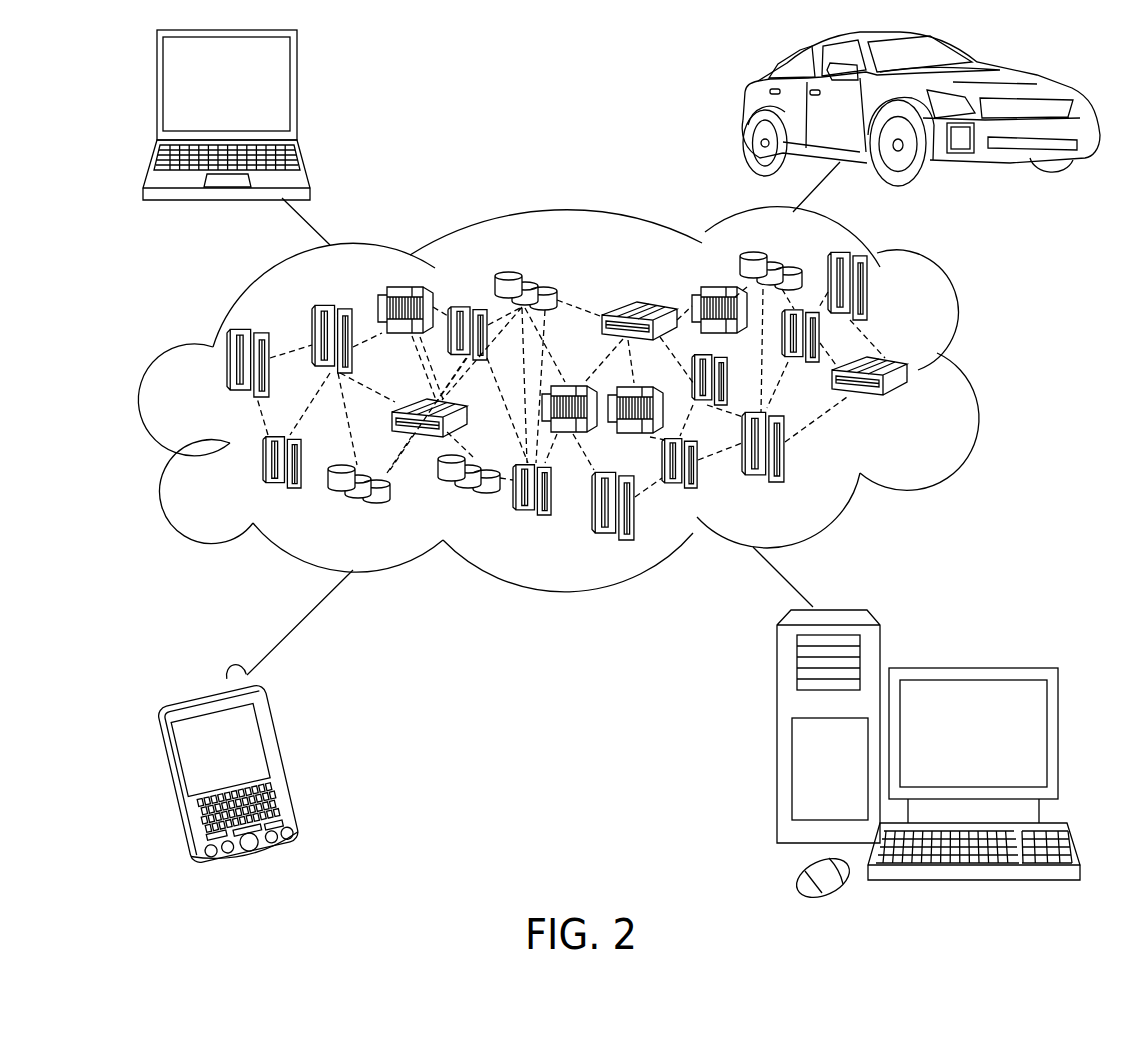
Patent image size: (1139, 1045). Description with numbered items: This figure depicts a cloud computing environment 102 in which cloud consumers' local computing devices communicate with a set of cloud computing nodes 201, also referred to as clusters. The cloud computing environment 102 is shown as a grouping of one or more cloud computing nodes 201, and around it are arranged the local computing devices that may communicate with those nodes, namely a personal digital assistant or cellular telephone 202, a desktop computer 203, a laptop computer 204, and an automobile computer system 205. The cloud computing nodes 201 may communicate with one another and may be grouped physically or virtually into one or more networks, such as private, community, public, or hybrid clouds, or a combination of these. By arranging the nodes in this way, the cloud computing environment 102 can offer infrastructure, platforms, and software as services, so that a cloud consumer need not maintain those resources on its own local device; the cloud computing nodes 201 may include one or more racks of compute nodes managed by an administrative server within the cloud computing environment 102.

The cloud computing environment 102 is at (972, 373).
The cloud computing nodes 201 is at (916, 404).
The cellular telephone 202 is at (287, 767).
The desktop computer 203 is at (970, 667).
The laptop computer 204 is at (297, 92).
The automobile computer system 205 is at (743, 110).